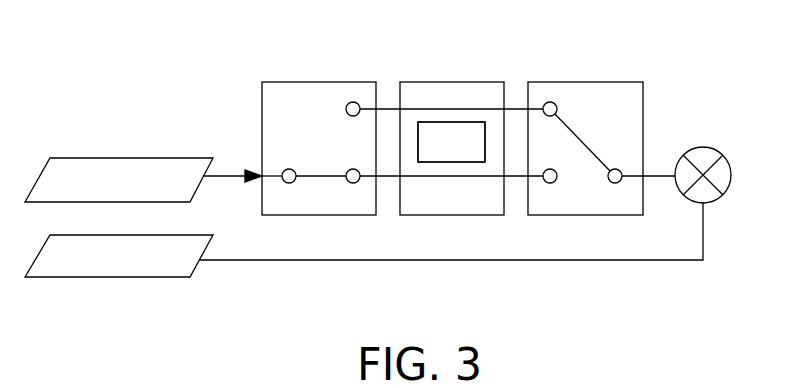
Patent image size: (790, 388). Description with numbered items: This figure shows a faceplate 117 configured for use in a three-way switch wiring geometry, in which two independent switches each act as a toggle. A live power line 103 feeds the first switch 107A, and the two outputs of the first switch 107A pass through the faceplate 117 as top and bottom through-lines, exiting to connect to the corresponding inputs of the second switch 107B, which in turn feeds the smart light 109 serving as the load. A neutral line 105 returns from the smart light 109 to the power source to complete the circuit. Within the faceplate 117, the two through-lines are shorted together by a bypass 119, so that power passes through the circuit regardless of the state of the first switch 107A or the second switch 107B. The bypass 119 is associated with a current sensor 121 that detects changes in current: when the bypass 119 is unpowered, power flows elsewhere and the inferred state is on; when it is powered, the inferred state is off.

The live power line 103 is at (230, 174).
The neutral line 105 is at (230, 261).
The first switch 107A is at (302, 82).
The second switch 107B is at (573, 82).
The smart light 109 is at (701, 148).
The faceplate 117 is at (435, 82).
The bypass 119 is at (453, 121).
The current sensor 121 is at (477, 162).